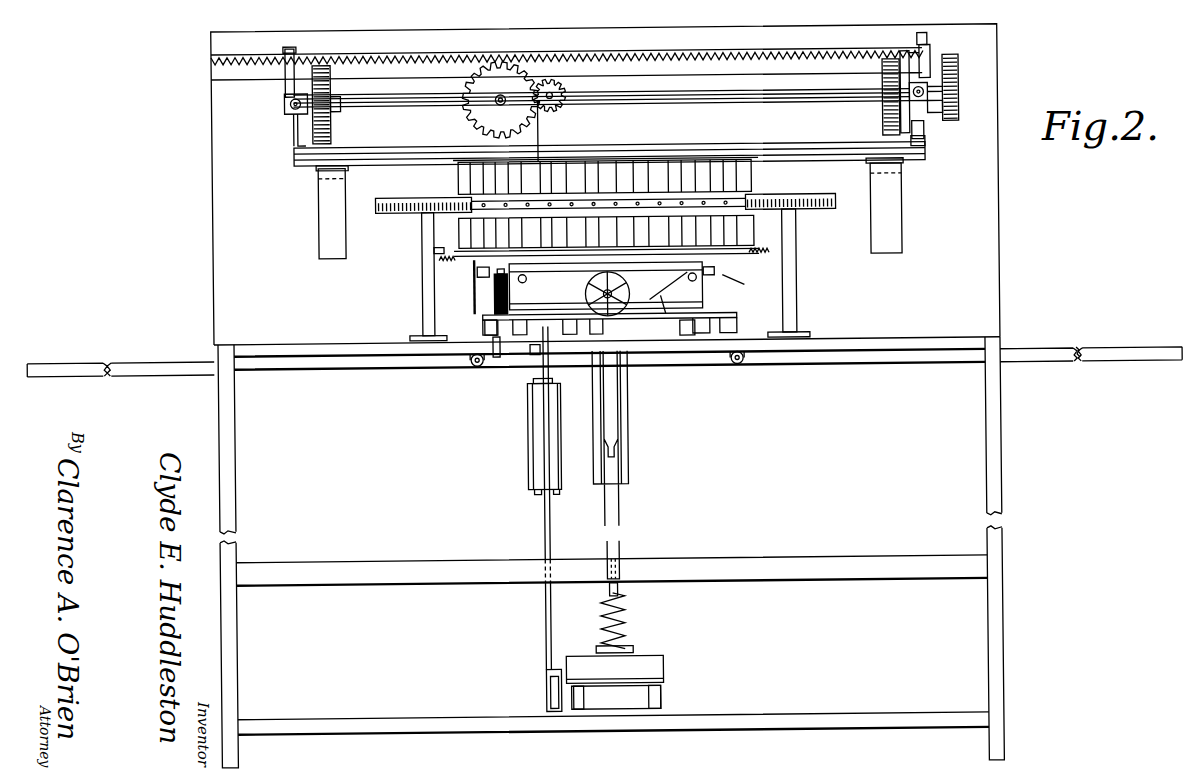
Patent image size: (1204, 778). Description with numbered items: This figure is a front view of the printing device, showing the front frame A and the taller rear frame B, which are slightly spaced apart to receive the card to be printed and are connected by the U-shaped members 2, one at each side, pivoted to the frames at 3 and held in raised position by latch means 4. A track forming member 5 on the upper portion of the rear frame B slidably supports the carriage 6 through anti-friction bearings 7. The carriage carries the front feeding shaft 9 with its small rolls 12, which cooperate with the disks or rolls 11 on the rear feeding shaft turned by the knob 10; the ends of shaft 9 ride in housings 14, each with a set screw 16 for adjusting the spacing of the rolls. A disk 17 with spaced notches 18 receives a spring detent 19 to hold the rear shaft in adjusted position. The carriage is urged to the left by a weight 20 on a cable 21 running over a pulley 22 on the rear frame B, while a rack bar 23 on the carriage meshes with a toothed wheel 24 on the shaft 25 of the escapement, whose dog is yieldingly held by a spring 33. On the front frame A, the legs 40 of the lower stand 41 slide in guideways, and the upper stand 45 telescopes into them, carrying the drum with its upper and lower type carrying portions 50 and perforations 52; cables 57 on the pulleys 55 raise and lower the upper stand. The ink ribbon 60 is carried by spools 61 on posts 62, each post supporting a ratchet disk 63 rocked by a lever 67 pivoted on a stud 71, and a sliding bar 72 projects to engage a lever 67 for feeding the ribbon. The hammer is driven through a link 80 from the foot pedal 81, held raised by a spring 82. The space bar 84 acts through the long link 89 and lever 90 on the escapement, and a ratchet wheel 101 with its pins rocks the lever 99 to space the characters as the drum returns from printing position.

The U-shaped member 2 is at (172, 377).
The pivot 3 is at (475, 370).
The latch means 4 is at (216, 372).
The track forming member 5 is at (335, 170).
The carriage 6 is at (287, 84).
The anti-friction bearings 7 is at (848, 150).
The front feeding shaft 9 is at (702, 103).
The knob 10 is at (955, 71).
The disks or rolls 11 is at (336, 84).
The small disks or rolls 12 is at (340, 117).
The housings 14 is at (287, 108).
The set screw 16 is at (297, 123).
The disk 17 is at (928, 140).
The notches 18 is at (947, 118).
The spring detent 19 is at (908, 58).
The weight 20 is at (530, 456).
The cable 21 is at (739, 92).
The pulley 22 is at (557, 91).
The rack bar 23 is at (438, 70).
The toothed wheel 24 is at (470, 121).
The shaft 25 is at (504, 97).
The spring 33 is at (1089, 344).
The legs 40 is at (700, 295).
The lower stand 41 is at (725, 282).
The upper stand 45 is at (473, 288).
The type carrying portions 50 is at (752, 166).
The perforations 52 is at (661, 286).
The pulleys 55 is at (610, 326).
The cables 57 is at (584, 286).
The ink ribbon 60 is at (435, 253).
The spools 61 is at (838, 200).
The posts 62 is at (423, 320).
The ratchet disk 63 is at (406, 216).
The lever 67 is at (478, 278).
The stud 71 is at (440, 266).
The bar 72 is at (663, 308).
The link 80 is at (625, 553).
The foot pedal 81 is at (660, 672).
The spring 82 is at (625, 628).
The space bar 84 is at (483, 328).
The long link 89 is at (543, 528).
The lever 90 is at (543, 700).
The lever 99 is at (495, 300).
The ratchet wheel 101 is at (497, 362).
The front frame A is at (897, 344).
The rear frame B is at (1000, 247).